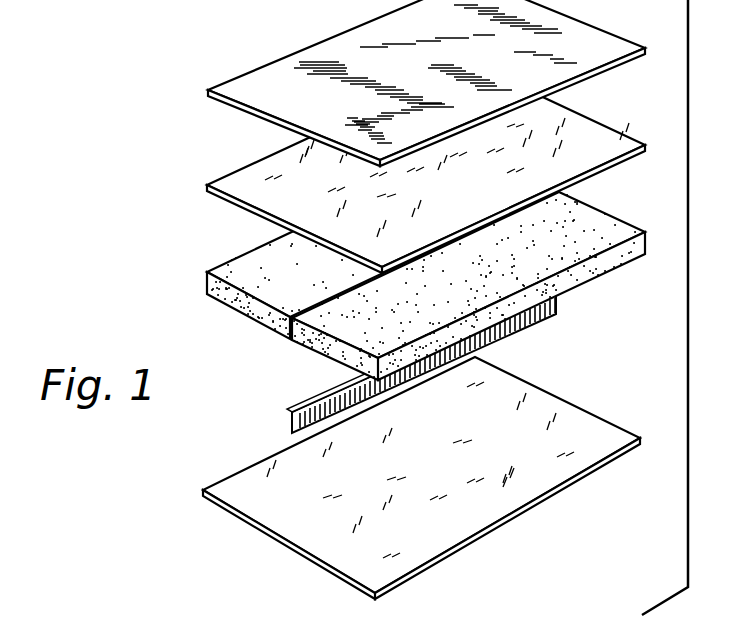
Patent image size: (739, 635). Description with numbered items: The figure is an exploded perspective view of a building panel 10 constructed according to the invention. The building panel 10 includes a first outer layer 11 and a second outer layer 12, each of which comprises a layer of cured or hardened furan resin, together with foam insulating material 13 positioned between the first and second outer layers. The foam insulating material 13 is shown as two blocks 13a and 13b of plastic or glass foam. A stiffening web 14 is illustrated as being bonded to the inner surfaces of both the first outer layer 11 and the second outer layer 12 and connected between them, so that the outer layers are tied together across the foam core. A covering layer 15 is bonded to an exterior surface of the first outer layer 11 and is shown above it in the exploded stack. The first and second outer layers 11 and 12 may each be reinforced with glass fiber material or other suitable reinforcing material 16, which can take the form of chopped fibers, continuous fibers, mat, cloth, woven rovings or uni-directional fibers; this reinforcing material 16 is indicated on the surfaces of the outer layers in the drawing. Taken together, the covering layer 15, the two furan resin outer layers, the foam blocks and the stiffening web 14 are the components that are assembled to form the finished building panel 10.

The building panel 10 is at (133, 237).
The first outer layer 11 is at (262, 207).
The second outer layer 12 is at (262, 472).
The foam insulating material 13 is at (394, 263).
The block 13a is at (280, 258).
The block 13b is at (590, 235).
The stiffening web 14 is at (340, 402).
The covering layer 15 is at (320, 62).
The reinforcing material 16 is at (302, 165).